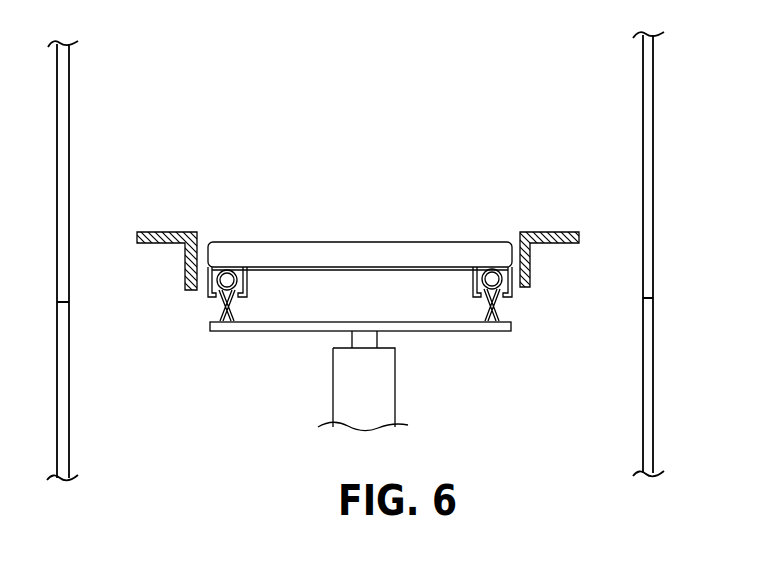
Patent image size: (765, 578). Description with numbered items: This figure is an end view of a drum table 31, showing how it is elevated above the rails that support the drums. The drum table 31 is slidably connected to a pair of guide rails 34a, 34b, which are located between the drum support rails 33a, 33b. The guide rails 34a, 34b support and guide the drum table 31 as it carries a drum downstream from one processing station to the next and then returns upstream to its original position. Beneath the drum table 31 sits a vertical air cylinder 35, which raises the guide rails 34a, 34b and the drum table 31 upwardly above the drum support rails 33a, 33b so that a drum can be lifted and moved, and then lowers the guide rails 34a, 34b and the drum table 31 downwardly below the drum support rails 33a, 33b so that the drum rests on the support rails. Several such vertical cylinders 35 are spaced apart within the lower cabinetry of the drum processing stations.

The drum table 31 is at (353, 242).
The drum support rail 33a is at (163, 232).
The drum support rail 33b is at (548, 232).
The guide rail 34a is at (208, 288).
The guide rail 34b is at (510, 292).
The vertical air cylinder 35 is at (388, 390).